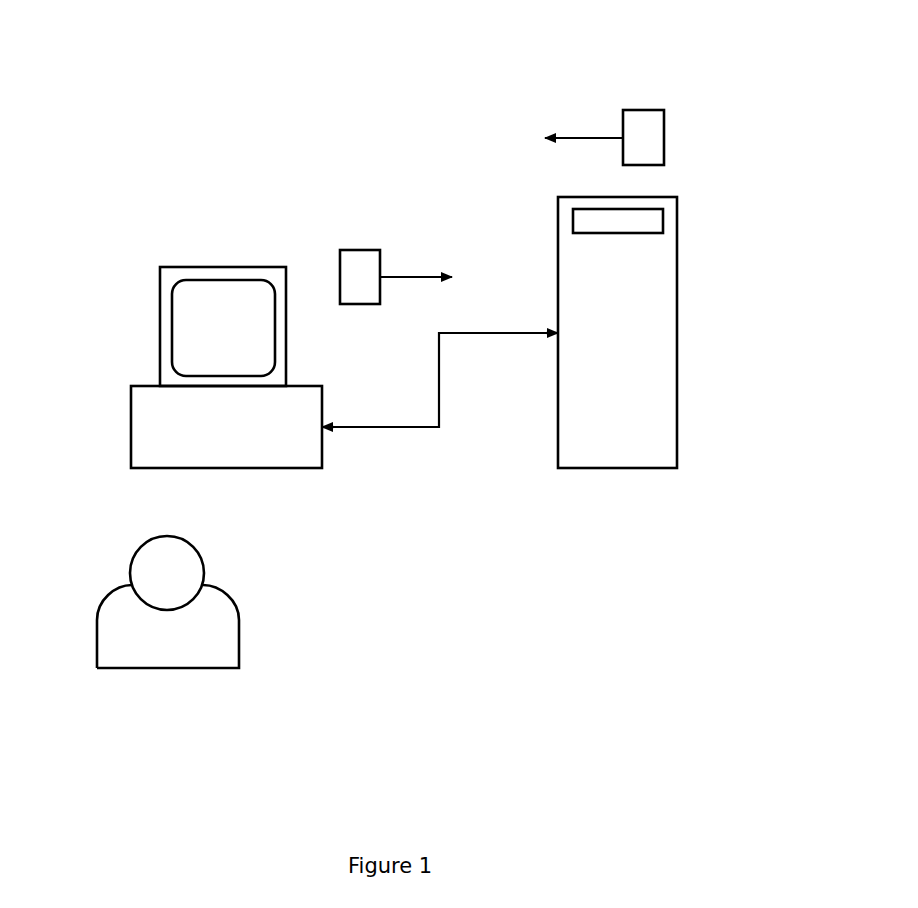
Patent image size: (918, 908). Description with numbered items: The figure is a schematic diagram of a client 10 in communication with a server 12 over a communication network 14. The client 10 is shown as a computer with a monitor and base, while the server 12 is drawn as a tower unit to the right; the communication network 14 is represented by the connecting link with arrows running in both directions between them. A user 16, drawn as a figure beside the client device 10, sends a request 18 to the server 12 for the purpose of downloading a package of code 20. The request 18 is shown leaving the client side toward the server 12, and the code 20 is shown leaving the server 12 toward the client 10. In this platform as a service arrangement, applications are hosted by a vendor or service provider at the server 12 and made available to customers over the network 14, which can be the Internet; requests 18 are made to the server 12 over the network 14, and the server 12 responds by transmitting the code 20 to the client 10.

The client 10 is at (131, 428).
The server 12 is at (677, 278).
The communication network 14 is at (397, 428).
The user 16 is at (239, 635).
The request 18 is at (362, 250).
The package of code 20 is at (645, 110).